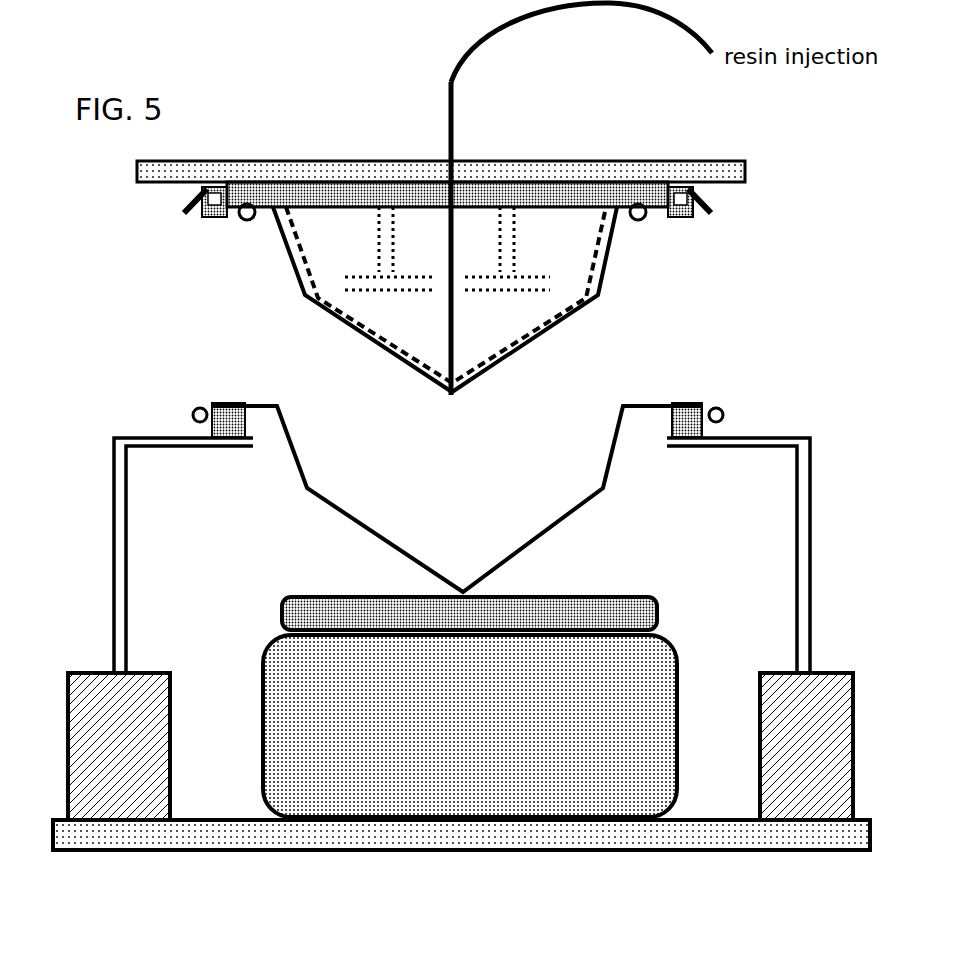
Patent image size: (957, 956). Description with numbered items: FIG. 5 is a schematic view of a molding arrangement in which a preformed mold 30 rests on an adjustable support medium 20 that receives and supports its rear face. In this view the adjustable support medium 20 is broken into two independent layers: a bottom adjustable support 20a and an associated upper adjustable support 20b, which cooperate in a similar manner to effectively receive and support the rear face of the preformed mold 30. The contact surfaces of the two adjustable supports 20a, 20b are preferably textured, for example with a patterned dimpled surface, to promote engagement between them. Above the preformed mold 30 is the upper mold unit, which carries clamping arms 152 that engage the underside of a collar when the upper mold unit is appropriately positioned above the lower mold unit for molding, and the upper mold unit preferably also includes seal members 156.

The adjustable support 20 is at (538, 693).
The bottom adjustable support 20a is at (298, 736).
The upper adjustable support 20b is at (285, 613).
The preformed mold 30 is at (625, 487).
The clamping arms 152 is at (182, 208).
The seal members 156 is at (220, 222).